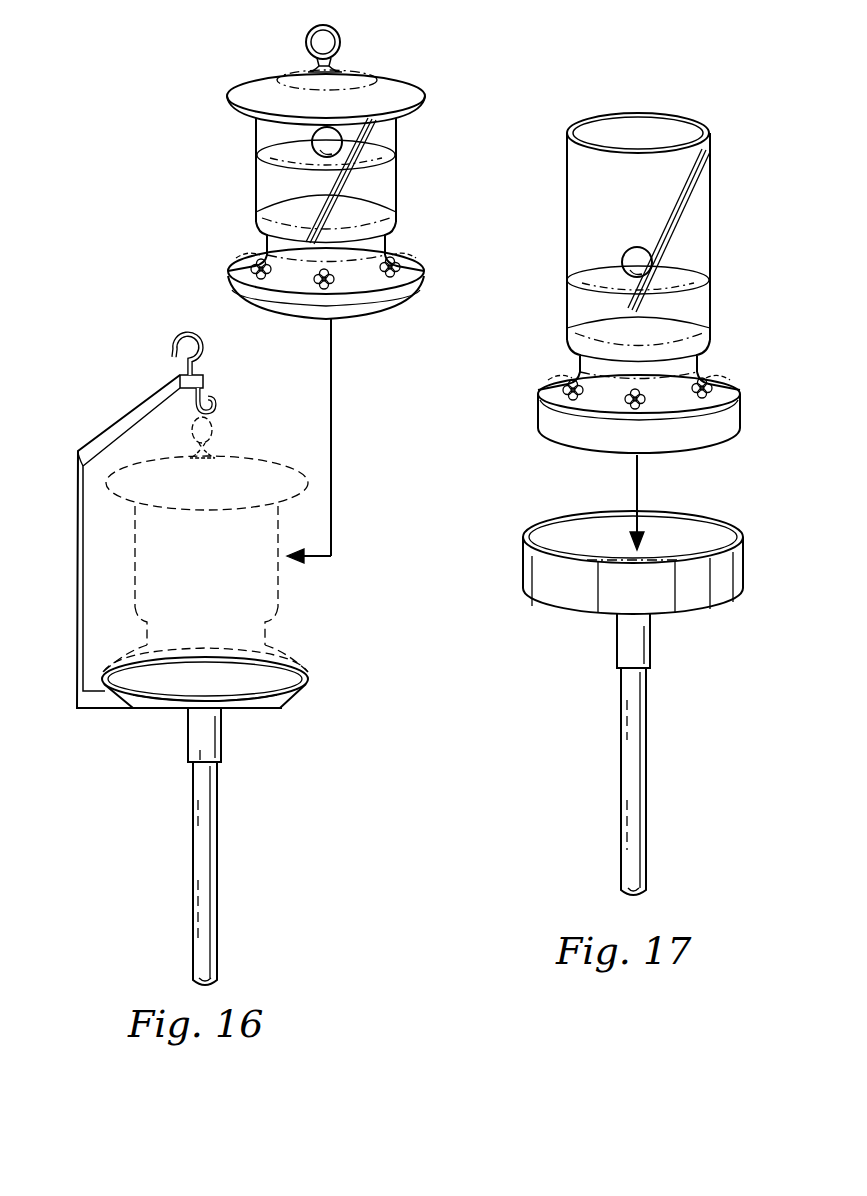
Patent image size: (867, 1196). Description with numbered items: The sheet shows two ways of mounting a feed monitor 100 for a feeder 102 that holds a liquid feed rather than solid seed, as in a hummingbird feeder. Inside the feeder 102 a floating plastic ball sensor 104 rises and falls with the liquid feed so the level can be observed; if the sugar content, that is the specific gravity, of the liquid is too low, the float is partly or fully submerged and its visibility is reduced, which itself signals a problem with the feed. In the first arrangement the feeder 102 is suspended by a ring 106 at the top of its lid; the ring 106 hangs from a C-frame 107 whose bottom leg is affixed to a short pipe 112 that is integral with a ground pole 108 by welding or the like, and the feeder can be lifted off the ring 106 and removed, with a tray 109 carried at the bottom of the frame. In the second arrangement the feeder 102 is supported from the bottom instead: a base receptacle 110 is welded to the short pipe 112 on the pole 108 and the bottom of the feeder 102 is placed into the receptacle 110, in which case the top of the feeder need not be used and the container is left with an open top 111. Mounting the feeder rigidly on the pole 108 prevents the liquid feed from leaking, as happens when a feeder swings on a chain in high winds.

In FIG. 16, the feed monitor 100 is at (385, 133).
In FIG. 17, the feed monitor 100 is at (692, 240).
In FIG. 16, the feeder 102 is at (256, 126).
In FIG. 17, the feeder 102 is at (567, 150).
In FIG. 16, the floating sensor 104 is at (335, 145).
In FIG. 17, the floating sensor 104 is at (623, 262).
In FIG. 16, the ring 106 is at (305, 34).
In FIG. 16, the hanger bracket 107 is at (77, 570).
In FIG. 16, the ground pole 108 is at (207, 921).
In FIG. 17, the ground pole 108 is at (633, 825).
In FIG. 16, the tray 109 is at (300, 663).
In FIG. 17, the base receptacle 110 is at (528, 583).
In FIG. 17, the open top 111 is at (675, 132).
In FIG. 16, the short pipe 112 is at (222, 732).
In FIG. 17, the short pipe 112 is at (652, 649).